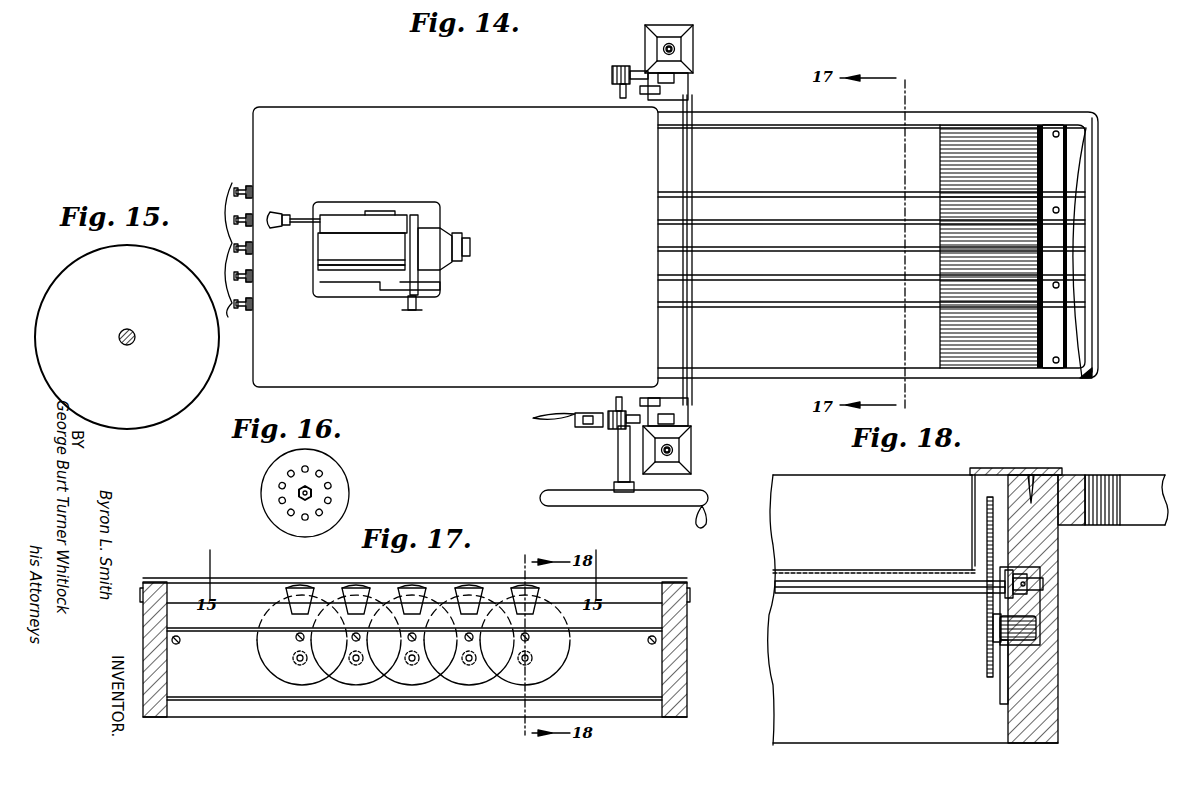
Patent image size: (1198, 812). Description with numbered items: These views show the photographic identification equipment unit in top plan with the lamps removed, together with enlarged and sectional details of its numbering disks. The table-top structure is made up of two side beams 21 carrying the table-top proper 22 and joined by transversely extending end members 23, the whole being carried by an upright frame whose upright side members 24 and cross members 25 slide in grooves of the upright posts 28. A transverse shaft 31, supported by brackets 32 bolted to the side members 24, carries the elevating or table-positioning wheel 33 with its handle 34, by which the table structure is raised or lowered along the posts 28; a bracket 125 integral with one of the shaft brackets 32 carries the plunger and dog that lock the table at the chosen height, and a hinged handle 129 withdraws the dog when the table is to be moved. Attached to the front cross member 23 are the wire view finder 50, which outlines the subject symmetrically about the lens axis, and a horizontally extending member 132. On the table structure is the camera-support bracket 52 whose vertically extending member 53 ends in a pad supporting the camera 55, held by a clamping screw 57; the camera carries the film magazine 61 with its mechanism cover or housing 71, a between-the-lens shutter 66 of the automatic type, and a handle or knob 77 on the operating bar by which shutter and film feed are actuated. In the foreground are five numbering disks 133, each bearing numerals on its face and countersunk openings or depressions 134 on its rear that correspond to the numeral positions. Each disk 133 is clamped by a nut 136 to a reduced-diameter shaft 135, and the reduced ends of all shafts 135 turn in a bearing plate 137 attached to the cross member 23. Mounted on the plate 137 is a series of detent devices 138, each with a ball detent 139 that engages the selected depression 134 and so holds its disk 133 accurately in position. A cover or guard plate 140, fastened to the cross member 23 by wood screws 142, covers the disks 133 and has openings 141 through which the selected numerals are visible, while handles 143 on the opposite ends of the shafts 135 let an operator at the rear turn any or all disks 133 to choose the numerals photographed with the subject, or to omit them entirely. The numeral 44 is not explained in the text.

In FIG. 14, the side beam 21 is at (924, 121).
In FIG. 17, the side beam 21 is at (160, 676).
In FIG. 14, the table-top proper 22 is at (484, 120).
In FIG. 18, the end member 23 is at (1042, 684).
In FIG. 14, the upright side member 24 is at (686, 89).
In FIG. 14, the cross member 25 is at (688, 162).
In FIG. 14, the upright post 28 is at (694, 37).
In FIG. 14, the transverse shaft 31 is at (618, 466).
In FIG. 14, the bracket 32 is at (610, 76).
In FIG. 14, the elevating or table-positioning wheel 33 is at (618, 504).
In FIG. 14, the handle 34 is at (696, 523).
In FIG. 14, the pivot screw 44 is at (664, 48).
In FIG. 14, the view finder 50 is at (1098, 226).
In FIG. 14, the camera-support bracket 52 is at (430, 206).
In FIG. 14, the vertically extending member 53 is at (364, 290).
In FIG. 14, the camera 55 is at (436, 247).
In FIG. 14, the clamping screw 57 is at (410, 314).
In FIG. 14, the film magazine 61 is at (336, 248).
In FIG. 14, the between-the-lens shutter 66 is at (452, 268).
In FIG. 14, the mechanism cover or housing 71 is at (352, 220).
In FIG. 14, the handle or knob 77 is at (270, 211).
In FIG. 14, the bracket 125 is at (601, 427).
In FIG. 14, the handle 129 is at (552, 420).
In FIG. 14, the horizontally extending member 132 is at (1080, 355).
In FIG. 18, the horizontally extending member 132 is at (1141, 492).
In FIG. 15, the numbering disk 133 is at (130, 424).
In FIG. 16, the numbering disk 133 is at (322, 466).
In FIG. 17, the numbering disk 133 is at (274, 643).
In FIG. 18, the numbering disk 133 is at (986, 665).
In FIG. 16, the countersunk openings or depressions 134 is at (278, 511).
In FIG. 14, the shaft 135 is at (803, 192).
In FIG. 15, the shaft 135 is at (130, 345).
In FIG. 17, the shaft 135 is at (298, 638).
In FIG. 18, the shaft 135 is at (838, 590).
In FIG. 16, the nut 136 is at (312, 491).
In FIG. 18, the nut 136 is at (998, 598).
In FIG. 17, the plate 137 is at (251, 688).
In FIG. 18, the plate 137 is at (1002, 694).
In FIG. 17, the detent device 138 is at (302, 662).
In FIG. 18, the detent device 138 is at (1032, 620).
In FIG. 18, the ball detent 139 is at (994, 629).
In FIG. 14, the cover or guard plate 140 is at (986, 138).
In FIG. 17, the cover or guard plate 140 is at (187, 582).
In FIG. 18, the cover or guard plate 140 is at (874, 572).
In FIG. 18, the opening 141 is at (972, 508).
In FIG. 14, the wood screw 142 is at (1058, 137).
In FIG. 18, the wood screw 142 is at (1030, 469).
In FIG. 14, the handle 143 is at (232, 182).